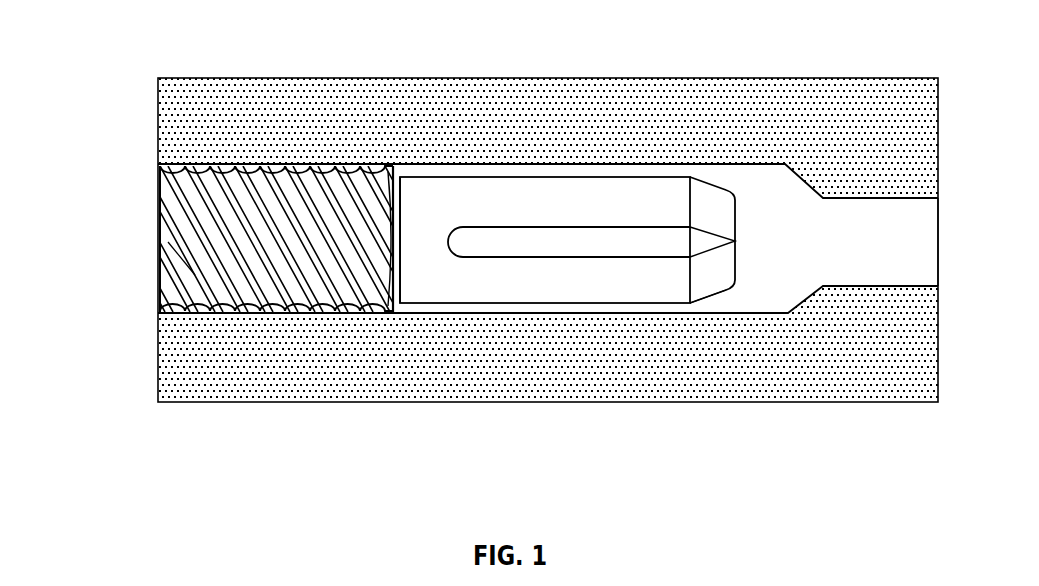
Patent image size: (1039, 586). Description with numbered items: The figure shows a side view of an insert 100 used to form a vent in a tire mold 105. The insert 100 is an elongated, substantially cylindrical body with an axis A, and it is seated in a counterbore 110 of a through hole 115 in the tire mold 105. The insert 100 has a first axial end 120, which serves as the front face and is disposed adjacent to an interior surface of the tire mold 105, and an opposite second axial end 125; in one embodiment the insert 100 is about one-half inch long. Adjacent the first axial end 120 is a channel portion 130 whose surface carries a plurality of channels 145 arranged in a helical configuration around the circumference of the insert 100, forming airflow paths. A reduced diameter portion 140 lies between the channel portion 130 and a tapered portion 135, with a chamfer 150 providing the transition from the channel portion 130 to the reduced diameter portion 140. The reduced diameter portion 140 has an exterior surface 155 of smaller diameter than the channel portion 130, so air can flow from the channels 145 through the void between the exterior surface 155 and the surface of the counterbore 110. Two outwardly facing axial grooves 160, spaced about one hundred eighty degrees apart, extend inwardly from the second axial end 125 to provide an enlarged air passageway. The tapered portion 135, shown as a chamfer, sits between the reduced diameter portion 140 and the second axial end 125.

The insert 100 is at (486, 243).
The tire mold 105 is at (193, 97).
The counterbore 110 is at (775, 265).
The through hole 115 is at (855, 243).
The first axial end 120 is at (250, 235).
The second axial end 125 is at (740, 207).
The channel portion 130 is at (250, 320).
The tapered portion 135 is at (717, 303).
The reduced diameter portion 140 is at (553, 323).
The channels 145 is at (276, 99).
The chamfer 150 is at (440, 165).
The exterior surface 155 is at (622, 245).
The axial grooves 160 is at (578, 232).
The axis A is at (166, 254).